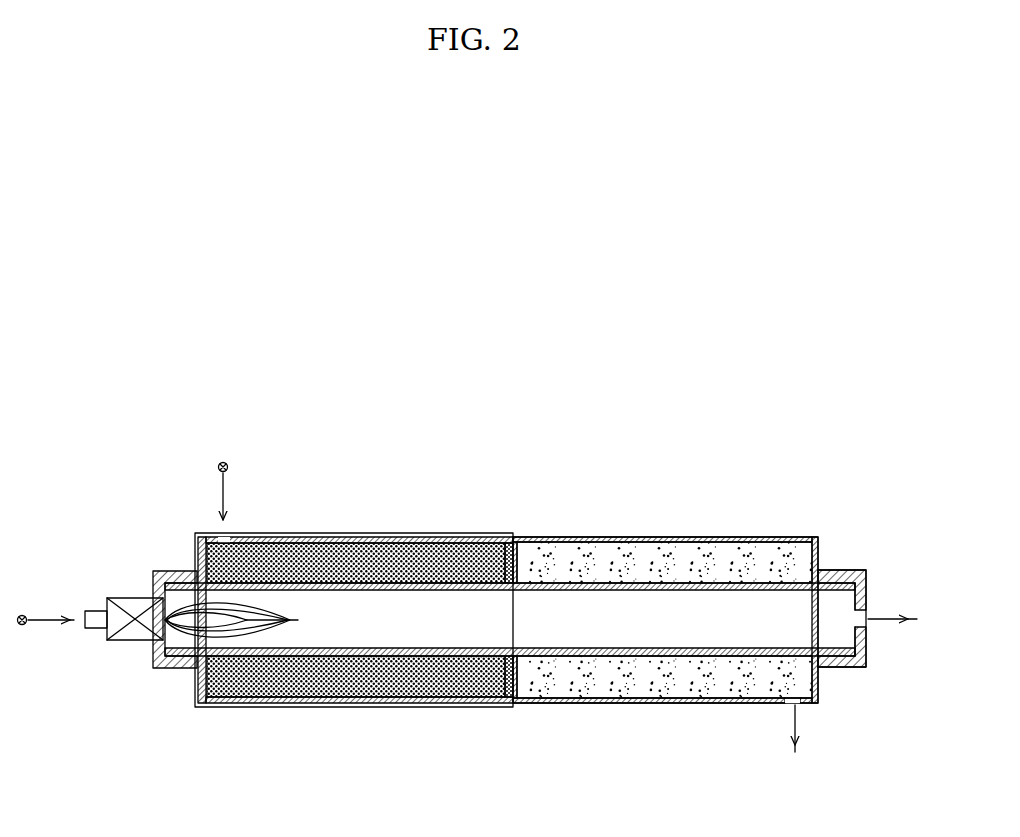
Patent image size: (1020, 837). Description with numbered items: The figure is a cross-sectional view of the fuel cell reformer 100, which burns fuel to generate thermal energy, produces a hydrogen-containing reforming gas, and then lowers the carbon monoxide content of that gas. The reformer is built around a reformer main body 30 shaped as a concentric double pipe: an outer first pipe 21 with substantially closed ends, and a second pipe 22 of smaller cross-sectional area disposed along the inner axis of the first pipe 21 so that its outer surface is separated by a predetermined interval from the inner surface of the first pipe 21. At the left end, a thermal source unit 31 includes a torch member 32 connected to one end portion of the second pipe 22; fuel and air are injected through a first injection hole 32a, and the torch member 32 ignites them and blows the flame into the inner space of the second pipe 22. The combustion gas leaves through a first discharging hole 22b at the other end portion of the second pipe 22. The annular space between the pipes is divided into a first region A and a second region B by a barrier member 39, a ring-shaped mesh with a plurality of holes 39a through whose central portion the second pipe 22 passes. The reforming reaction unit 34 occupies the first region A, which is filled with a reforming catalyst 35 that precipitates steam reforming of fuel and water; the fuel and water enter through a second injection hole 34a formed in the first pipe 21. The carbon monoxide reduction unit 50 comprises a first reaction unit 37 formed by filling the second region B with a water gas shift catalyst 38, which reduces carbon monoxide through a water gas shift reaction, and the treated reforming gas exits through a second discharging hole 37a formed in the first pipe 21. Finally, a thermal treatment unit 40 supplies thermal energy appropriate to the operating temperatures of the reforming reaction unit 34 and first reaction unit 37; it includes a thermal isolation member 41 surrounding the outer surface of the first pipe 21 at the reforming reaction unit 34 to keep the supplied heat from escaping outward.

The fuel cell reformer 100 is at (585, 446).
The first pipe 21 is at (598, 703).
The second pipe 22 is at (555, 658).
The first discharging hole 22b is at (866, 623).
The reformer main body 30 is at (510, 691).
The thermal source unit 31 is at (158, 625).
The torch member 32 is at (135, 597).
The first injection hole 32a is at (92, 610).
The reforming reaction unit 34 is at (356, 639).
The second injection hole 34a is at (230, 537).
The reforming catalyst 35 is at (380, 553).
The first reaction unit 37 is at (665, 611).
The second discharging hole 37a is at (792, 699).
The water gas shift catalyst 38 is at (615, 550).
The barrier member 39 is at (506, 550).
The holes 39a is at (523, 545).
The thermal treatment unit 40 is at (191, 707).
The thermal isolation member 41 is at (285, 705).
The carbon monoxide reduction unit 50 is at (664, 639).
The first region A is at (323, 555).
The second region B is at (668, 552).